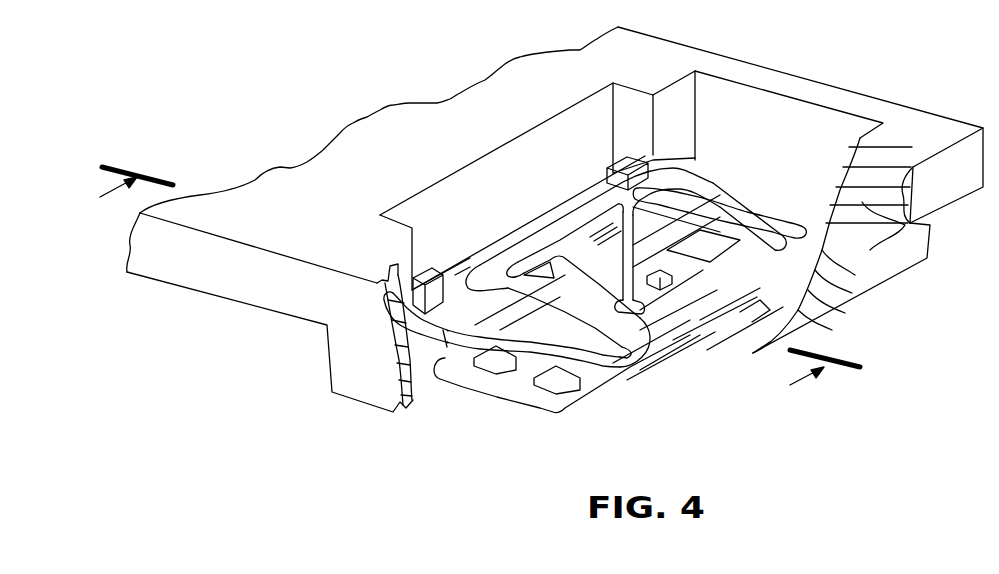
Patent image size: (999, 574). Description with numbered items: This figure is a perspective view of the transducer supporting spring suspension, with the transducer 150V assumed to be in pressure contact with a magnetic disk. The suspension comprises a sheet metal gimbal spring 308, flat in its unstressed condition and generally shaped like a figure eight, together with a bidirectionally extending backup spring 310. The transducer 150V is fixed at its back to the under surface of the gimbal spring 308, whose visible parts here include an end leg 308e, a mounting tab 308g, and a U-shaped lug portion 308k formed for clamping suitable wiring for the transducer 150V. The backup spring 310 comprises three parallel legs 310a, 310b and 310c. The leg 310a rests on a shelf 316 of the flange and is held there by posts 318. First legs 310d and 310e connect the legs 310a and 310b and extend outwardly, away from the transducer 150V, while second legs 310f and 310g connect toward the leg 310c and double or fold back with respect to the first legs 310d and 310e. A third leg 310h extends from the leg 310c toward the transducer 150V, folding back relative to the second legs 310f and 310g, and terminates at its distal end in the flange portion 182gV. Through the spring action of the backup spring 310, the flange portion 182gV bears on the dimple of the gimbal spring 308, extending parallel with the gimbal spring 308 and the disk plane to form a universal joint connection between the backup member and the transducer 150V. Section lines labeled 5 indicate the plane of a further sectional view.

The section line 5- 5 is at (480, 263).
The transducer 150V is at (667, 360).
The flange portion 182gV is at (720, 318).
The gimbal spring 308 is at (691, 376).
The end leg 308e is at (507, 398).
The mounting tab 308g is at (721, 357).
The U-shaped lug portion 308k is at (655, 273).
The backup spring 310 is at (567, 287).
The leg 310a is at (530, 233).
The leg 310b is at (637, 345).
The leg 310c is at (583, 220).
The first leg 310d is at (793, 210).
The first leg 310e is at (437, 345).
The second leg 310f is at (717, 187).
The second leg 310g is at (393, 292).
The third leg 310h is at (632, 276).
The shelf 316 is at (482, 260).
The posts 318 is at (433, 270).